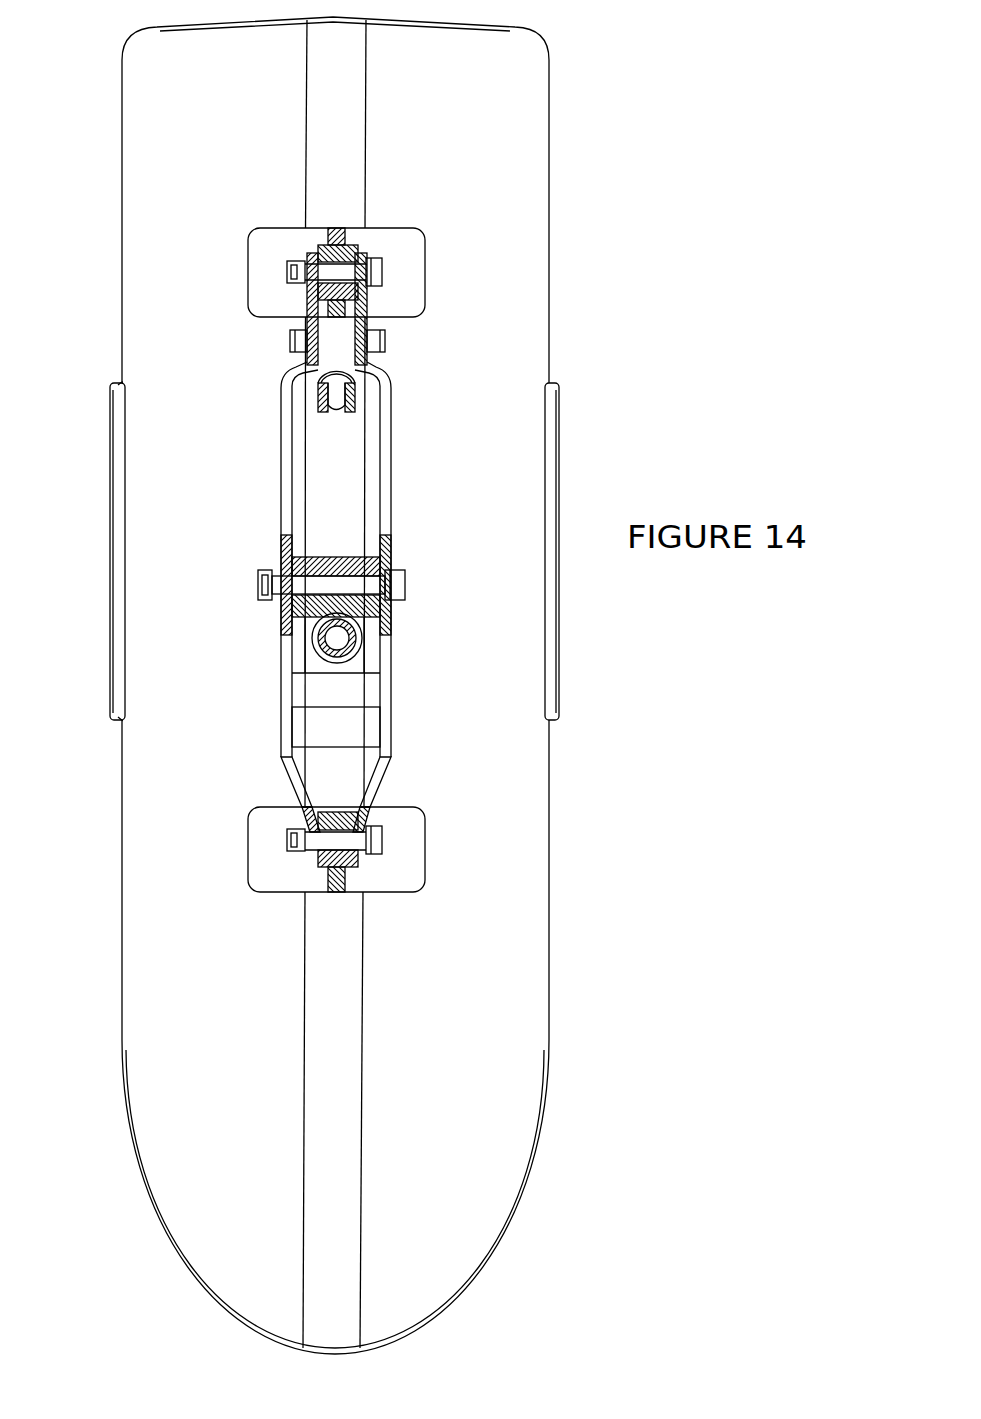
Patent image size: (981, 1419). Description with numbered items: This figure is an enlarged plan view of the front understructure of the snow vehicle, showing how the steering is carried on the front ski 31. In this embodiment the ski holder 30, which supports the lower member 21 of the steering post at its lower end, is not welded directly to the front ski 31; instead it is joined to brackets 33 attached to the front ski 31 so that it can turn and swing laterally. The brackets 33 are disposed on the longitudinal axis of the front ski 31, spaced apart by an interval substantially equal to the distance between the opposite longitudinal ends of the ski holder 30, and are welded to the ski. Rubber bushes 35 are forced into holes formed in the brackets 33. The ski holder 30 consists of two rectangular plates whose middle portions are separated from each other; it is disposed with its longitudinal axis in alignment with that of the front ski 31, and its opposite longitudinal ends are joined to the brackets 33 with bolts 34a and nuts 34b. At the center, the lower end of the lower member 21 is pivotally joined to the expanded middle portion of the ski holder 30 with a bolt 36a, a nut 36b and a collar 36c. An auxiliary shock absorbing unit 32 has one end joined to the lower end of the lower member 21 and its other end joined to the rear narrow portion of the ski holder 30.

The lower member 21 is at (316, 638).
The ski holder 30 is at (281, 450).
The front ski 31 is at (120, 1037).
The auxiliary shock absorbing unit 32 is at (360, 395).
The brackets 33 is at (264, 228).
The bolts 34a is at (382, 274).
The nuts 34b is at (297, 255).
The rubber bushes 35 is at (363, 252).
The bolt 36a is at (405, 587).
The nut 36b is at (268, 570).
The collar 36c is at (392, 616).